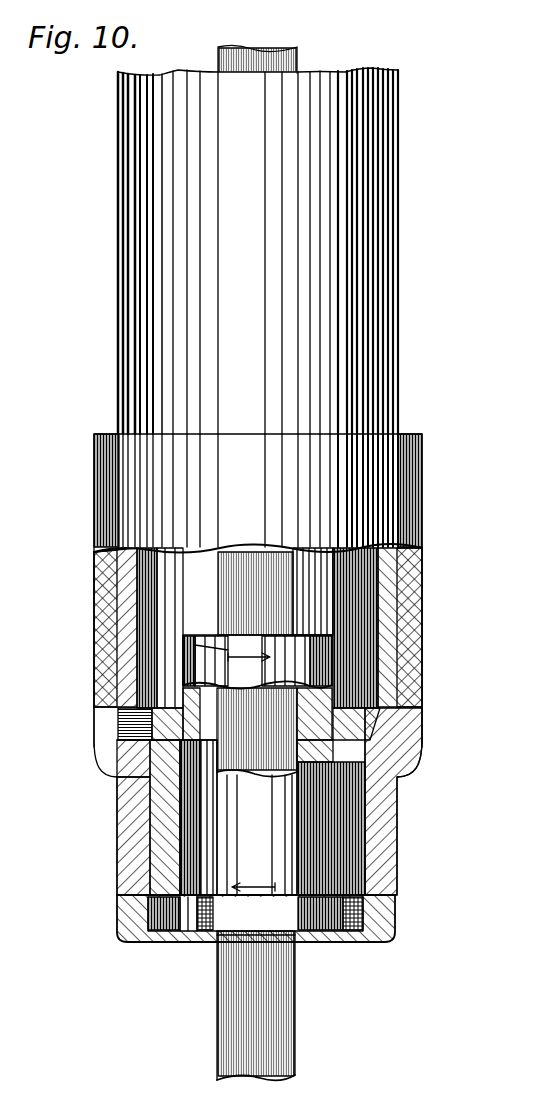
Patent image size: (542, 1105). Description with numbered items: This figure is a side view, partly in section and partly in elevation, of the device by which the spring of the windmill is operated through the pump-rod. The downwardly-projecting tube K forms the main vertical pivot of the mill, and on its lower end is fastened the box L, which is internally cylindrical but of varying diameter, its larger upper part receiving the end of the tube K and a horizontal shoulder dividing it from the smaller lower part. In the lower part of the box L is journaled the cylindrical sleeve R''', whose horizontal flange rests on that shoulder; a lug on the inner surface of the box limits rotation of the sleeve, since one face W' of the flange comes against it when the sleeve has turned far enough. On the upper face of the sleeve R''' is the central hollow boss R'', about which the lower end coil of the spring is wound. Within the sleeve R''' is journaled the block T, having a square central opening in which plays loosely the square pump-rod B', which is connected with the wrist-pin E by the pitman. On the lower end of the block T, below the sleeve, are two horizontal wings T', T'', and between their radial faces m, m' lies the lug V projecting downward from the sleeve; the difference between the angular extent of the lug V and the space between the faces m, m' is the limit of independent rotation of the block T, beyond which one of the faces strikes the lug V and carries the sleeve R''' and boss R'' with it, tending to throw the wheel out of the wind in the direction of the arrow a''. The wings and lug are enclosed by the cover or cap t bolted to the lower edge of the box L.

The tube K is at (445, 674).
The box L is at (450, 620).
The pump-rod B' is at (263, 562).
The central hollow boss R'' is at (181, 653).
The face of the flange W' is at (107, 705).
The wrist-pin E is at (380, 726).
The cylindrical sleeve R''' is at (265, 791).
The clearance space a''' is at (232, 647).
The block T is at (272, 817).
The arrow a'' is at (253, 879).
The cover or cap t is at (130, 910).
The wing T' is at (165, 943).
The radial face m is at (199, 948).
The lug V is at (275, 936).
The radial face m' is at (329, 948).
The wing T'' is at (376, 949).